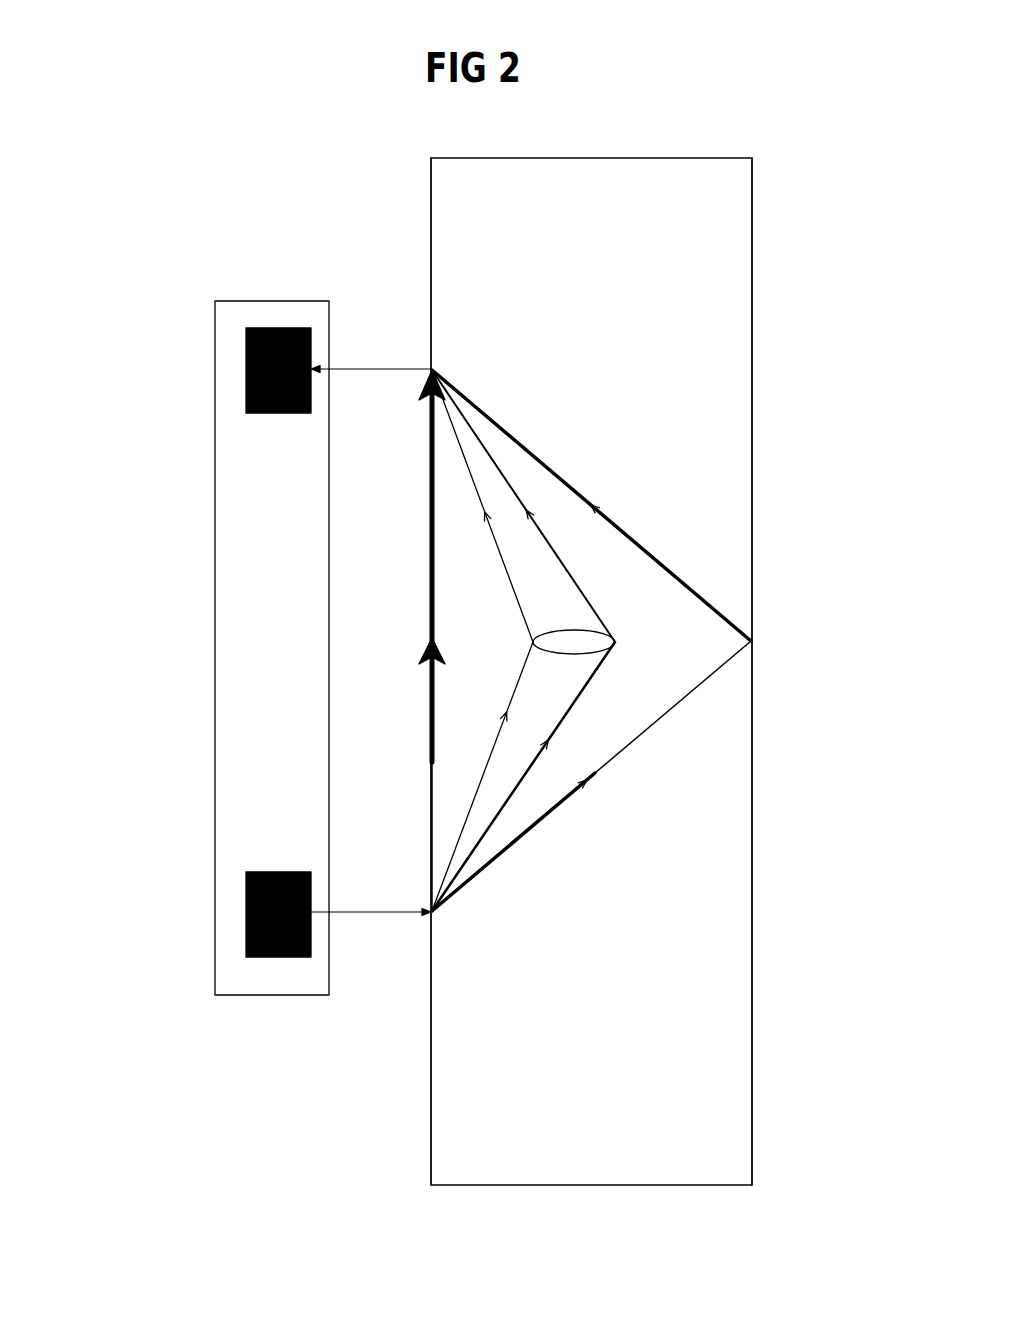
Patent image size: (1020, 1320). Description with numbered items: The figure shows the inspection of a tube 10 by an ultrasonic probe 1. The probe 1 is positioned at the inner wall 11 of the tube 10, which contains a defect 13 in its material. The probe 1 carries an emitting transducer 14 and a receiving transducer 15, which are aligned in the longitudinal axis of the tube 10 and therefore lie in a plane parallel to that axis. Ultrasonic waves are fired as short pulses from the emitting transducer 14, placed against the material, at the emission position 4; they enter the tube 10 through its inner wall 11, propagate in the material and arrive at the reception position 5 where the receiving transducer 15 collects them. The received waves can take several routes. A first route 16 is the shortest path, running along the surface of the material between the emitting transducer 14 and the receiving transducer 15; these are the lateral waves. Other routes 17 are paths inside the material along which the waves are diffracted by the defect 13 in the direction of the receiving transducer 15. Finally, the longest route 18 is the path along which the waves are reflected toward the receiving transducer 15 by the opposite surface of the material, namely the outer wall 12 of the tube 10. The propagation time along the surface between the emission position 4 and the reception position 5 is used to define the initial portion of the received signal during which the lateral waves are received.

The probe 1 is at (190, 464).
The emission position 4 is at (431, 914).
The reception position 5 is at (431, 365).
The tube 10 is at (635, 158).
The inner wall 11 is at (431, 270).
The outer wall 12 is at (752, 421).
The defect 13 is at (573, 630).
The emitting transducer 14 is at (280, 957).
The receiving transducer 15 is at (280, 328).
The first route 16 is at (431, 806).
The other routes 17 is at (490, 527).
The longest route 18 is at (680, 700).